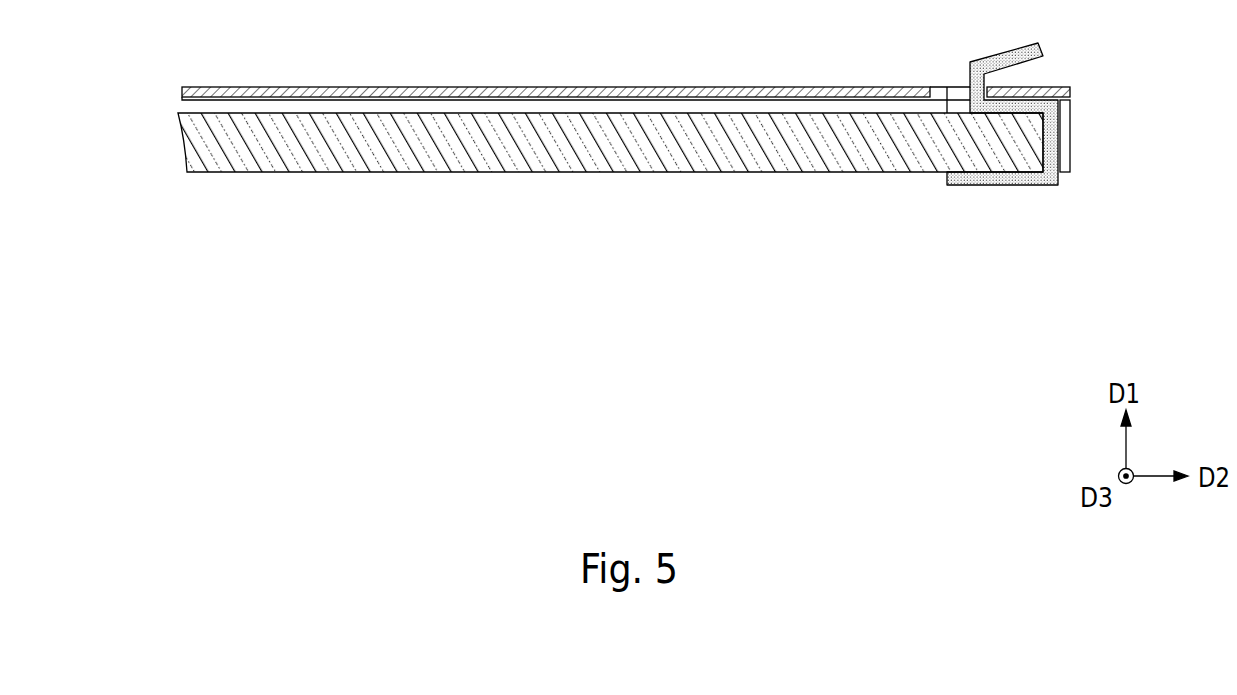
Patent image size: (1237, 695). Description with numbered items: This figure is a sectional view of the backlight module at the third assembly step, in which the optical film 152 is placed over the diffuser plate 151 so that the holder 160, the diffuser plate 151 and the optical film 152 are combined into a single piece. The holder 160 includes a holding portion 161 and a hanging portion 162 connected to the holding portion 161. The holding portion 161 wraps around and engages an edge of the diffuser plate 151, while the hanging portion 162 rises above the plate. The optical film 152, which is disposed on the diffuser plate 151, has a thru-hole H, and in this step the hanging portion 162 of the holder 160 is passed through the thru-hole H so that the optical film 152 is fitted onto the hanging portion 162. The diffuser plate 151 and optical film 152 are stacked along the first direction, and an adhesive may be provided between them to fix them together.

The diffuser plate 151 is at (202, 147).
The optical film 152 is at (186, 92).
The thru-hole H is at (944, 73).
The holder 160 is at (1080, 114).
The holding portion 161 is at (1047, 130).
The hanging portion 162 is at (1036, 50).